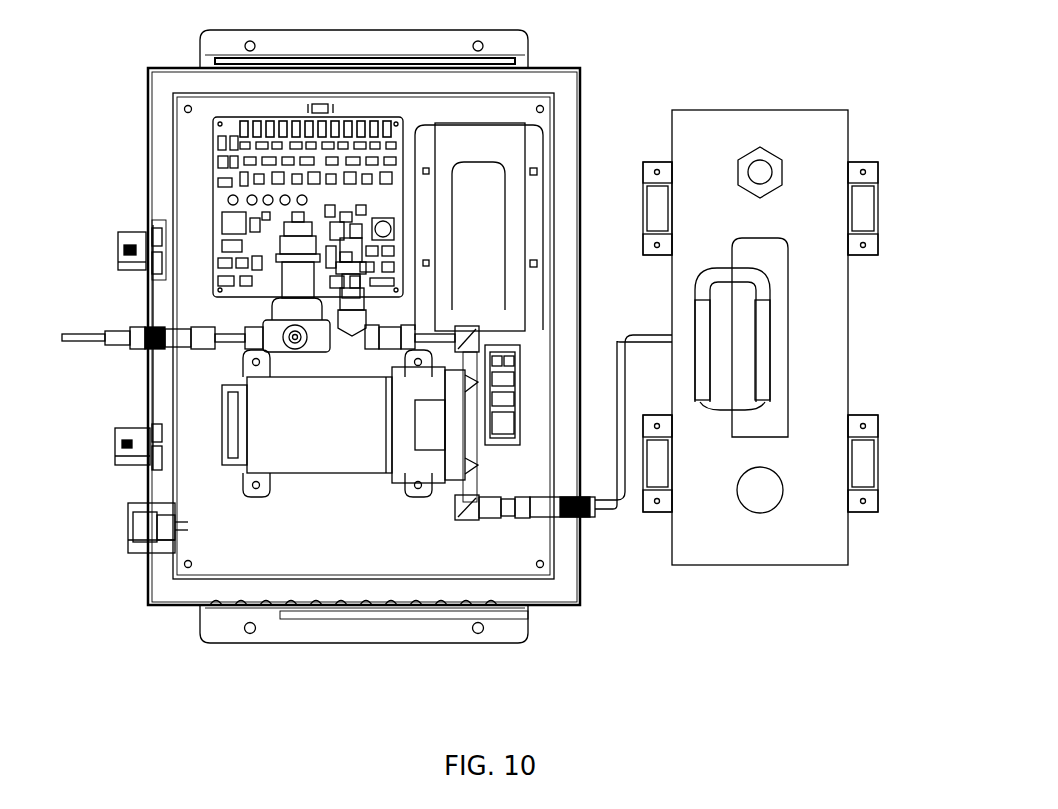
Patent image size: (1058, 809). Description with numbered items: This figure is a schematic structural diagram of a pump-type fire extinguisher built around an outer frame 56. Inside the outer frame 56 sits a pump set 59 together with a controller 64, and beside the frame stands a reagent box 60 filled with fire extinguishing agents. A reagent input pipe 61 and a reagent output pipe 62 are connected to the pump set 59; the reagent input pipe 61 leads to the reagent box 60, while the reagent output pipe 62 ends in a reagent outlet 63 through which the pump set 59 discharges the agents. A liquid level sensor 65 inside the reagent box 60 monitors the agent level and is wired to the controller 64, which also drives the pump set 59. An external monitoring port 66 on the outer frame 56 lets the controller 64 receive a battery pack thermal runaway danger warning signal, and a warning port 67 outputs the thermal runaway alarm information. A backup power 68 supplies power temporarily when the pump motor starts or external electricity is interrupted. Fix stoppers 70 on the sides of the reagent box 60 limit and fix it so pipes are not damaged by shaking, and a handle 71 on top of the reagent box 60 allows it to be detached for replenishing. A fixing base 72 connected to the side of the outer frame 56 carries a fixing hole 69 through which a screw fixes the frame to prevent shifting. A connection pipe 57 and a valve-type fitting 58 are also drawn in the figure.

The outer frame 56 is at (148, 148).
The tube 57 is at (584, 498).
The valve 58 is at (148, 328).
The pump set 59 is at (333, 460).
The reagent box 60 is at (760, 110).
The reagent input pipe 61 is at (537, 512).
The reagent output pipe 62 is at (455, 351).
The reagent outlet 63 is at (70, 333).
The controller 64 is at (212, 212).
The liquid level sensor 65 is at (782, 500).
The external monitoring port 66 is at (120, 250).
The warning port 67 is at (118, 456).
The backup power 68 is at (488, 138).
The fixing hole 69 is at (480, 634).
The fix stoppers 70 is at (876, 210).
The handle 71 is at (760, 330).
The fixing base 72 is at (368, 645).